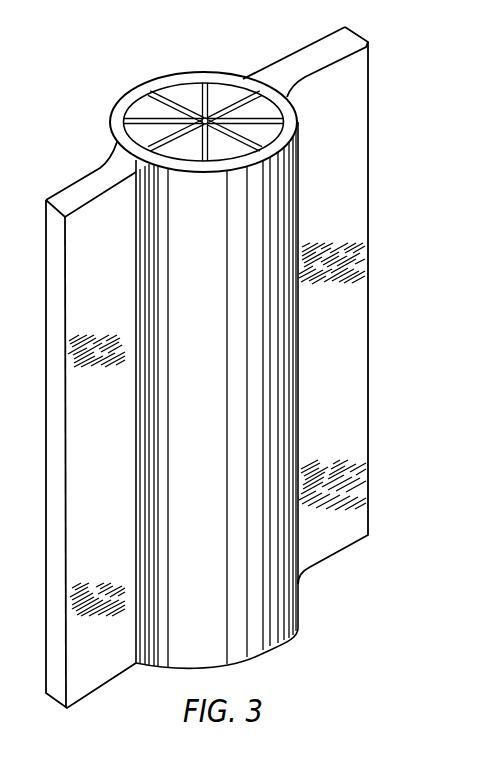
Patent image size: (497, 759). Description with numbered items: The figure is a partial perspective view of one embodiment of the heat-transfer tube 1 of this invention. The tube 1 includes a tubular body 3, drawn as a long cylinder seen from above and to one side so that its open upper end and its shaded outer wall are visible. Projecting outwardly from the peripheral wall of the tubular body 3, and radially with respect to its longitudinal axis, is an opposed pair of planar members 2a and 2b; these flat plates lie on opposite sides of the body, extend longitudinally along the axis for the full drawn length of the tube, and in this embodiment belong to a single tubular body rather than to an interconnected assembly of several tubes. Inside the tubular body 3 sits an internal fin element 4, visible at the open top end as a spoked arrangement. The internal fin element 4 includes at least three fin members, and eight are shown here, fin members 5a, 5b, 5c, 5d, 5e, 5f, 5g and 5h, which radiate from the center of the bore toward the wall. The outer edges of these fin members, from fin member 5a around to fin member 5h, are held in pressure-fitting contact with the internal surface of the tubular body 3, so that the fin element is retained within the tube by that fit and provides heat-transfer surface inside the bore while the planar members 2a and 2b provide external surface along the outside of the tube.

The heat transfer tube 1 is at (104, 106).
The planar member 2a is at (70, 190).
The planar member 2b is at (323, 47).
The tubular body 3 is at (178, 73).
The internal fin element 4 is at (215, 137).
The fin member 5a is at (138, 98).
The fin member 5b is at (130, 142).
The fin member 5c is at (191, 172).
The fin member 5d is at (284, 160).
The fin member 5e is at (291, 134).
The fin member 5f is at (245, 81).
The fin member 5g is at (203, 81).
The fin member 5h is at (181, 96).